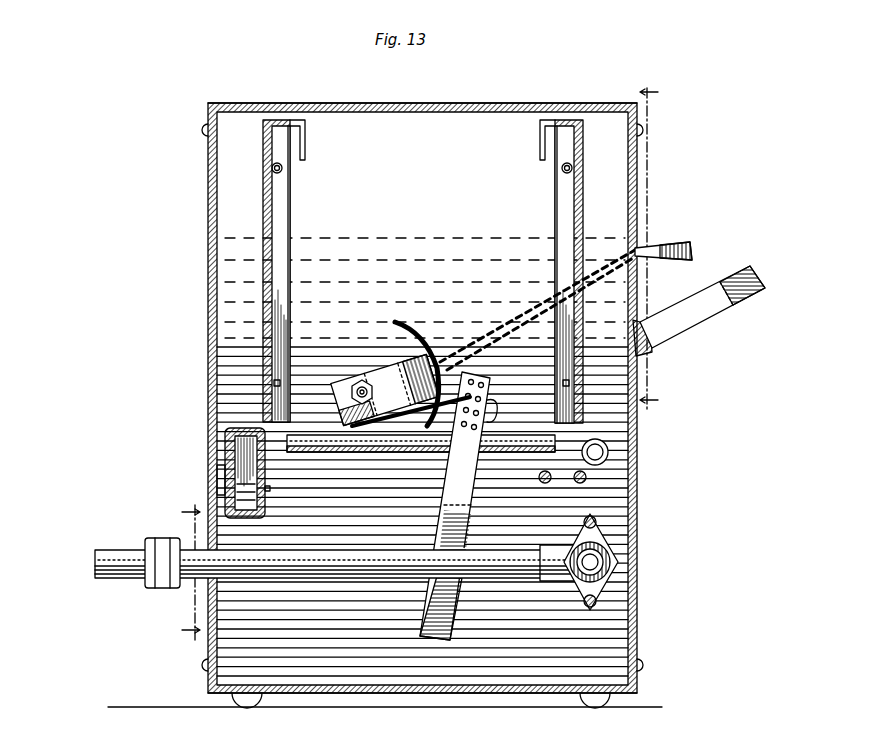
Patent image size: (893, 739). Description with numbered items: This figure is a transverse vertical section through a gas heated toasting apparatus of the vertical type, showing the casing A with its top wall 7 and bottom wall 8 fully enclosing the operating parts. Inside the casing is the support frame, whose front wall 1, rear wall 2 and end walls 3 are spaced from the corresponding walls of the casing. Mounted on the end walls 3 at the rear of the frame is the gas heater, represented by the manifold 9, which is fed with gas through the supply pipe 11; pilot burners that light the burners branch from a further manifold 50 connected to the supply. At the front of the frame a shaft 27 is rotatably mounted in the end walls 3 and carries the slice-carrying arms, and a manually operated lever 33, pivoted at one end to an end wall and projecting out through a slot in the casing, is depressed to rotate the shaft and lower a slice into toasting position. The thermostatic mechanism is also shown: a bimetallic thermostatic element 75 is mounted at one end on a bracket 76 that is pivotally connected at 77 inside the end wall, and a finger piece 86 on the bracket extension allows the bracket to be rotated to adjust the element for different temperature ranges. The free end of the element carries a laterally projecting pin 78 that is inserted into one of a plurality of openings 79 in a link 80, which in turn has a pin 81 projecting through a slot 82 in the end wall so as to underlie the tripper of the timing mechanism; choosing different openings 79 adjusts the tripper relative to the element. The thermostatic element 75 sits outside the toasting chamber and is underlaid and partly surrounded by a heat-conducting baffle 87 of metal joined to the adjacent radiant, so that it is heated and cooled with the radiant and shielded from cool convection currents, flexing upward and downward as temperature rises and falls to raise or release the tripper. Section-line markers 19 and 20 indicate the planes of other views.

The casing A is at (210, 301).
The front wall 1 is at (584, 254).
The rear wall 2 is at (264, 268).
The end walls 3 is at (232, 327).
The top wall 7 is at (272, 104).
The bottom wall 8 is at (306, 694).
The manifold 9 is at (226, 452).
The supply pipe 11 is at (612, 560).
The section line 19 is at (189, 572).
The section line 20 is at (652, 251).
The shaft 27 is at (550, 485).
The manually operated lever 33 is at (645, 322).
The manifold 50 is at (583, 446).
The bimetallic thermostatic element 75 is at (370, 418).
The bracket 76 is at (376, 372).
The pivotal connection 77 is at (362, 386).
The pin 78 is at (480, 482).
The openings 79 is at (455, 506).
The link 80 is at (455, 506).
The pin 81 is at (457, 620).
The slot 82 is at (440, 612).
The finger piece 86 is at (686, 239).
The heat-conducting baffle 87 is at (636, 450).